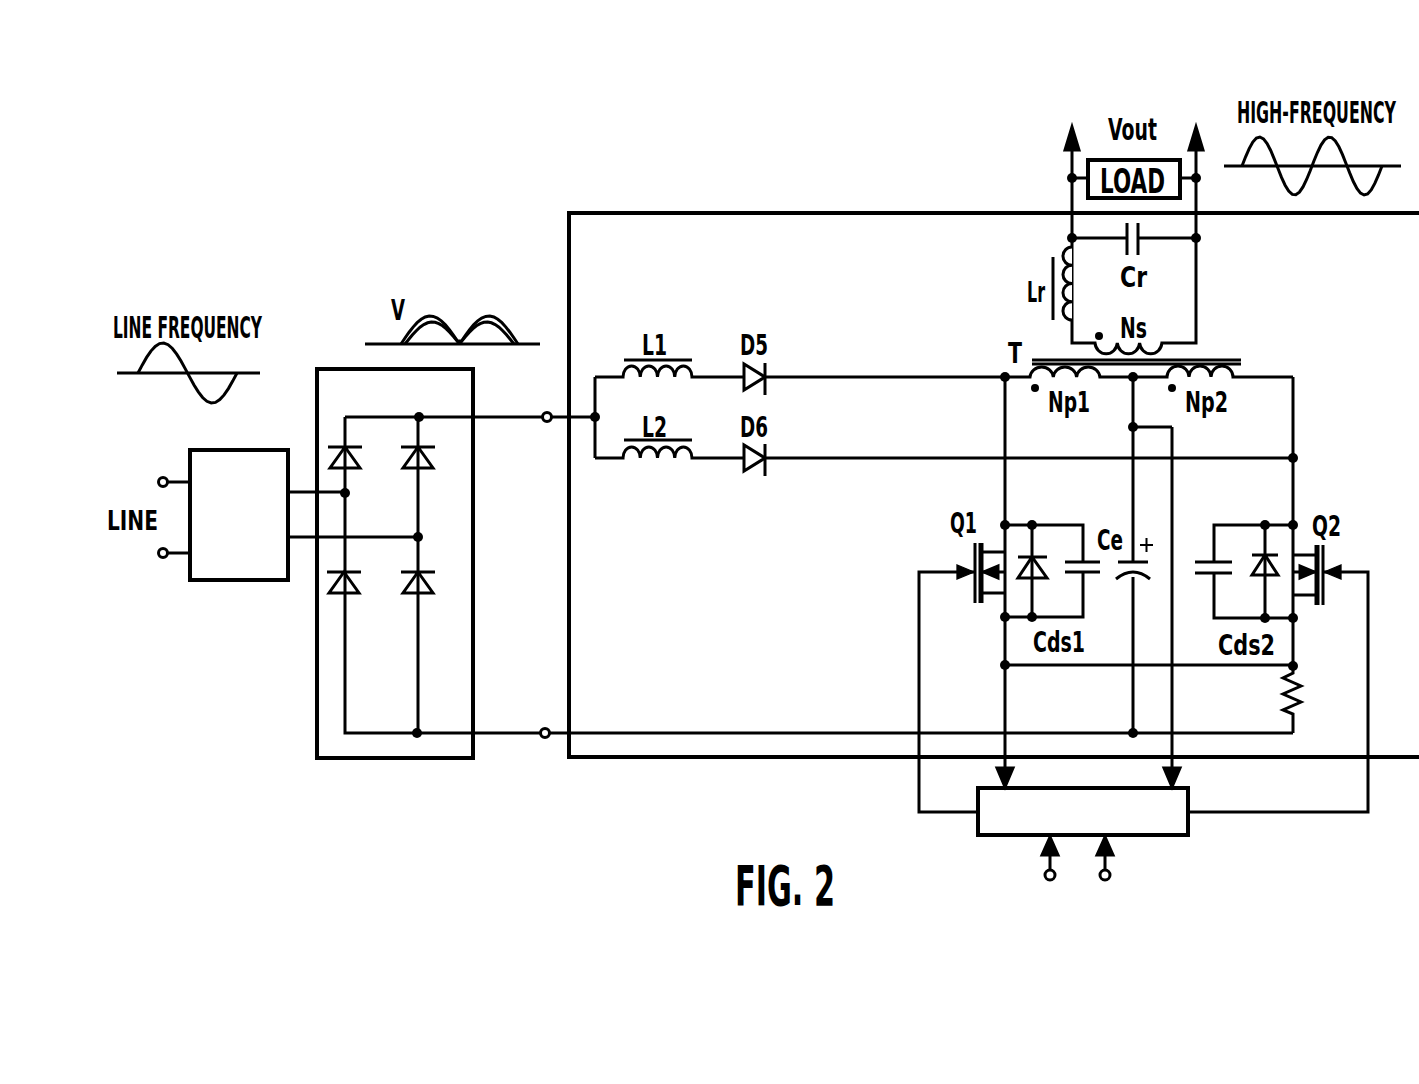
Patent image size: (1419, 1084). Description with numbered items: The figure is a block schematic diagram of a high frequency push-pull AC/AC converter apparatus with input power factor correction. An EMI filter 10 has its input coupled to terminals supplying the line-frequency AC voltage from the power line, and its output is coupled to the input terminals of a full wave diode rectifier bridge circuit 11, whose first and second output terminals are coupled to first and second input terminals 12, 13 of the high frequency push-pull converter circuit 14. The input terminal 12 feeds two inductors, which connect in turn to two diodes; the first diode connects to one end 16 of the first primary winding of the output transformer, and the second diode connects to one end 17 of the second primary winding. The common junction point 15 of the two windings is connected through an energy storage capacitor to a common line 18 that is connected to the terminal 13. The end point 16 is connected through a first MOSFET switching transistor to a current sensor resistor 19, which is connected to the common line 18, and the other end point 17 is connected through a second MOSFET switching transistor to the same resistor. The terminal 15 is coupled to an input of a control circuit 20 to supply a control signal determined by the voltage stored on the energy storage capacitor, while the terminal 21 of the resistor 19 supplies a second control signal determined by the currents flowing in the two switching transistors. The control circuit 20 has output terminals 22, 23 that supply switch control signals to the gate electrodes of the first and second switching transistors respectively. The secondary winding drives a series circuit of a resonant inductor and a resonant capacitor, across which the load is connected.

The EMI filter 10 is at (231, 581).
The full wave diode rectifier bridge circuit 11 is at (327, 366).
The first input terminal 12 is at (545, 421).
The second input terminal 13 is at (543, 727).
The high frequency push-pull converter circuit 14 is at (745, 212).
The common junction point 15 is at (1125, 382).
The end of primary winding Np1 16 is at (1000, 380).
The end of primary winding Np2 17 is at (1297, 376).
The common line 18 is at (823, 716).
The current sensor resistor 19 is at (1283, 692).
The control circuit 20 is at (1172, 827).
The terminal of the resistor 21 is at (1297, 668).
The output terminal 22 is at (978, 818).
The output terminal 23 is at (1190, 832).